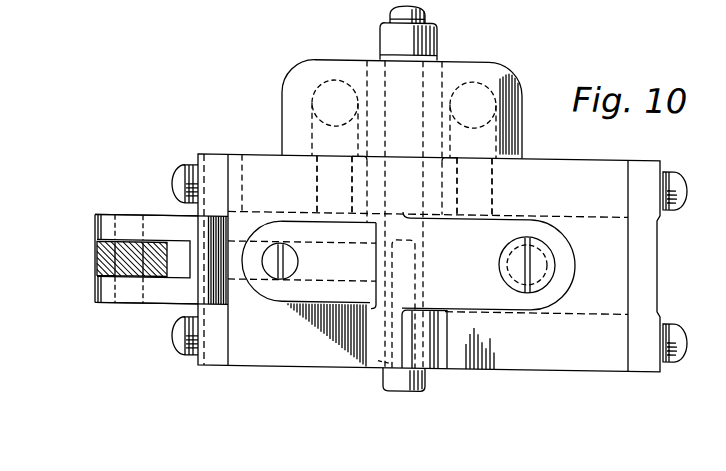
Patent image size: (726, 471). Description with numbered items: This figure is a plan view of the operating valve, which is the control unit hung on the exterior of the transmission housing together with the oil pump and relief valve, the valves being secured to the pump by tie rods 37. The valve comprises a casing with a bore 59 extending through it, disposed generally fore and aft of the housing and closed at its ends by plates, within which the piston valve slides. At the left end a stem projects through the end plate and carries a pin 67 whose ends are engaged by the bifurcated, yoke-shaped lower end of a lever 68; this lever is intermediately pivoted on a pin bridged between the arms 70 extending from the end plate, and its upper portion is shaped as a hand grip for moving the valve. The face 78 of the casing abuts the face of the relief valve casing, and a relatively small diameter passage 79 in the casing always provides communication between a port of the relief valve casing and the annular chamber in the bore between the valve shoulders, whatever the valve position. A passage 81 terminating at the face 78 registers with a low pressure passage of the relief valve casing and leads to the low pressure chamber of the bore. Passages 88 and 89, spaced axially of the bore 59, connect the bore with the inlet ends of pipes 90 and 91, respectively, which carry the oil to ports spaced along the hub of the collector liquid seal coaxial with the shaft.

The tie rods 37 is at (427, 377).
The bore 59 is at (554, 208).
The pin 67 is at (119, 304).
The lever 68 is at (97, 260).
The arms 70 is at (95, 223).
The face of the casing 78 is at (550, 363).
The passage 79 is at (372, 365).
The passage 81 is at (242, 157).
The passage 88 is at (493, 178).
The passage 89 is at (316, 178).
The pipe 90 is at (506, 63).
The pipe 91 is at (332, 76).